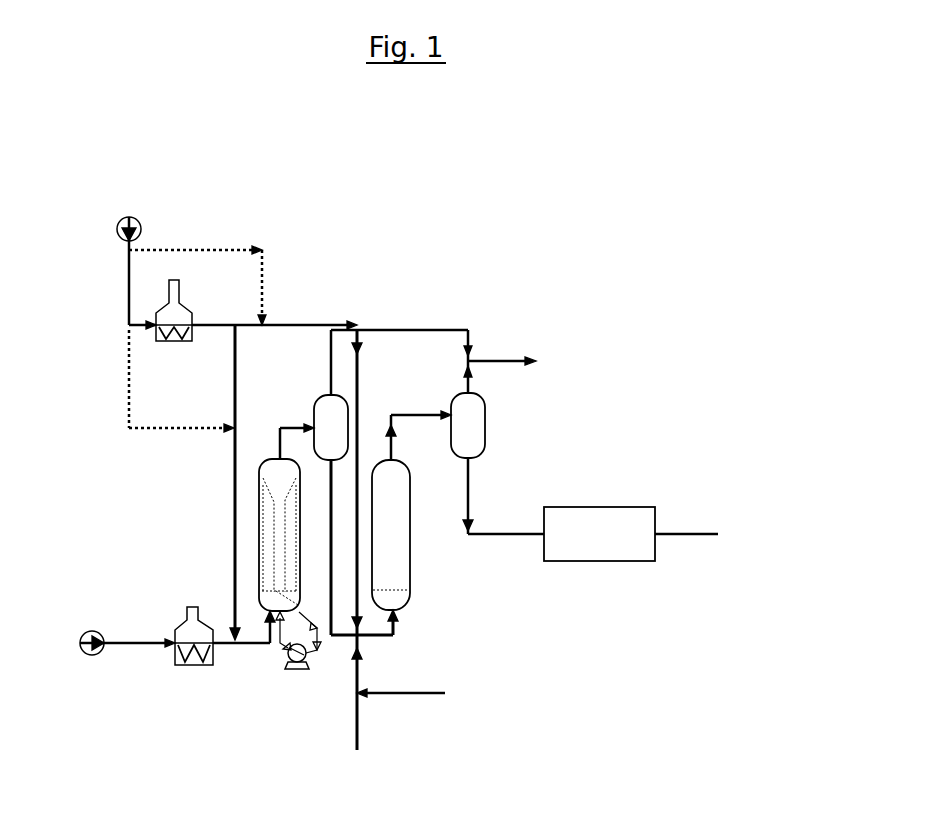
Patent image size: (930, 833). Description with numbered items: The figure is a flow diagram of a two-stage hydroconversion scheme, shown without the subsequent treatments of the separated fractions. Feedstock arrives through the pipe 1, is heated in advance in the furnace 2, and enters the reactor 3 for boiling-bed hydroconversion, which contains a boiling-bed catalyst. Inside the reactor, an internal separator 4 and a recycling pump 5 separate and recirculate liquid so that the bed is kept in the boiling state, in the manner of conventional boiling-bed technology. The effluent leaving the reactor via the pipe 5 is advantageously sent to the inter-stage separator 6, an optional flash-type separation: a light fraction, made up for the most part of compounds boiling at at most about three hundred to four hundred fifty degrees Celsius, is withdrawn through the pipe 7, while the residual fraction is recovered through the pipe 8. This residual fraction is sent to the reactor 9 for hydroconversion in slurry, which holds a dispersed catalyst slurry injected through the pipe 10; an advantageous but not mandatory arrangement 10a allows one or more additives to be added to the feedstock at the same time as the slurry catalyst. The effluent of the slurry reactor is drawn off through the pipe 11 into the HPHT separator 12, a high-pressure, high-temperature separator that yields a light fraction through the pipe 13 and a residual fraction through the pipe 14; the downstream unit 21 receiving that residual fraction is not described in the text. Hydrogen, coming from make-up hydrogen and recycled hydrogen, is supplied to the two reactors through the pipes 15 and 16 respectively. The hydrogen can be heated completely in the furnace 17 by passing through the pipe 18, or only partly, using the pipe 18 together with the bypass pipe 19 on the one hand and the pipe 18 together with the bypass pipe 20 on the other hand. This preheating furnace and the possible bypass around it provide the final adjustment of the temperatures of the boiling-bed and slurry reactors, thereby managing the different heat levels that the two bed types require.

The pipe 1 is at (135, 652).
The furnace 2 is at (192, 603).
The reactor 3 is at (258, 515).
The internal separator 4 is at (285, 540).
The recycling pump 5 is at (302, 427).
The inter-stage separator 6 is at (318, 398).
The pipe 7 is at (388, 328).
The pipe 8 is at (335, 540).
The reactor 9 is at (410, 525).
The pipe 10 is at (365, 665).
The arrangement 10a is at (418, 688).
The pipe 11 is at (405, 412).
The HPHT separator 12 is at (488, 422).
The pipe 13 is at (472, 380).
The pipe 14 is at (472, 490).
The pipe 15 is at (237, 370).
The pipe 16 is at (360, 382).
The furnace 17 is at (180, 306).
The pipe 18 is at (130, 322).
The pipe 19 is at (126, 398).
The pipe 20 is at (200, 250).
The downstream unit 21 is at (595, 507).